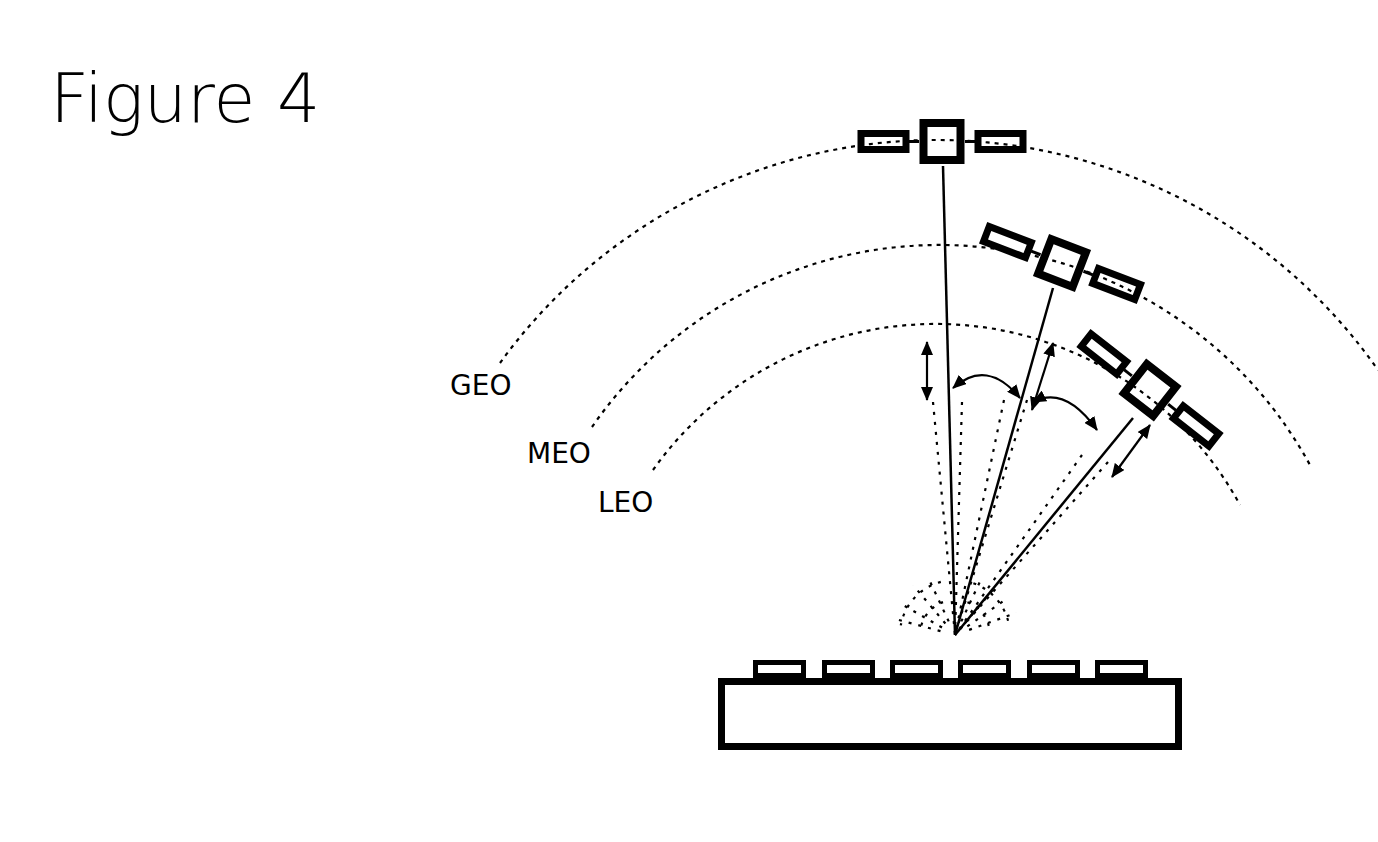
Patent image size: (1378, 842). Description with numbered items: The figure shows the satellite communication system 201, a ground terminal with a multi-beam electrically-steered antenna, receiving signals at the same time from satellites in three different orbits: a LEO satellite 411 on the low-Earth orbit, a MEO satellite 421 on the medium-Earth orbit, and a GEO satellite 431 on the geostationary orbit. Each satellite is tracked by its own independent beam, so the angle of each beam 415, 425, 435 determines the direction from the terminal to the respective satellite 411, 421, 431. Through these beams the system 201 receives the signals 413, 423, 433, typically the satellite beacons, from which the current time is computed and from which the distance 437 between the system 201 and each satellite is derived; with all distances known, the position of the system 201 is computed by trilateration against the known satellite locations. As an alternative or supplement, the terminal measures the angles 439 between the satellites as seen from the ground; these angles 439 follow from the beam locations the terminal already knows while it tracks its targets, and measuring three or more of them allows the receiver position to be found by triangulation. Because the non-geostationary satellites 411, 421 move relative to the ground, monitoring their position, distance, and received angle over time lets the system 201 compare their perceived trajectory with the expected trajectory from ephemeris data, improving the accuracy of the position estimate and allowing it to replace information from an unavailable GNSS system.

The satellite communication system 201 is at (950, 705).
The GEO satellite 431 is at (953, 127).
The signal from GEO satellite 433 is at (924, 400).
The beam to GEO satellite 435 is at (923, 518).
The distance 437 is at (899, 371).
The angles between satellites 439 is at (1025, 385).
The MEO satellite 421 is at (1063, 263).
The signal from MEO satellite 423 is at (1004, 461).
The beam to MEO satellite 425 is at (1051, 399).
The LEO satellite 411 is at (1170, 394).
The signal from LEO satellite 413 is at (1044, 526).
The beam to LEO satellite 415 is at (1122, 474).